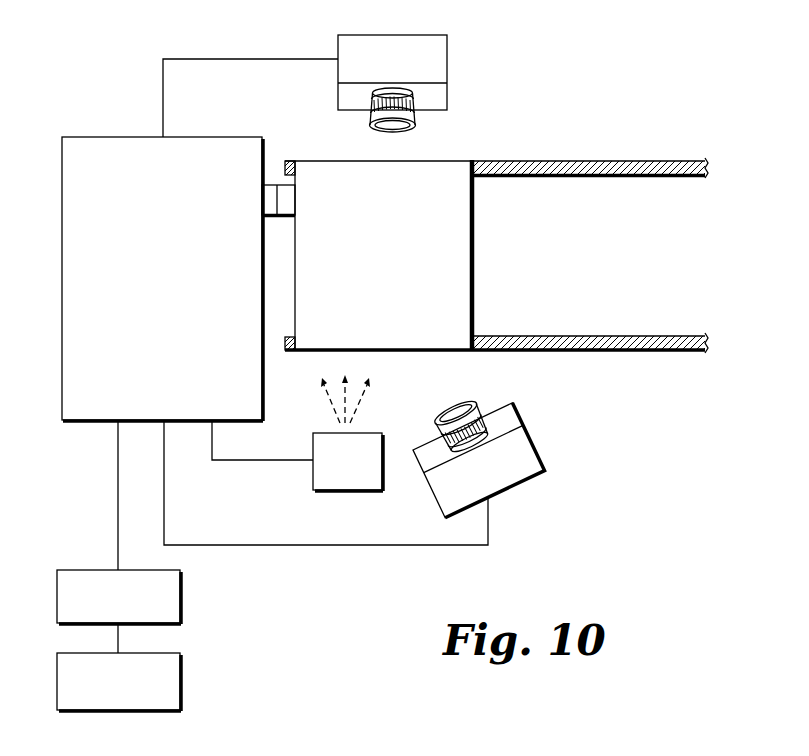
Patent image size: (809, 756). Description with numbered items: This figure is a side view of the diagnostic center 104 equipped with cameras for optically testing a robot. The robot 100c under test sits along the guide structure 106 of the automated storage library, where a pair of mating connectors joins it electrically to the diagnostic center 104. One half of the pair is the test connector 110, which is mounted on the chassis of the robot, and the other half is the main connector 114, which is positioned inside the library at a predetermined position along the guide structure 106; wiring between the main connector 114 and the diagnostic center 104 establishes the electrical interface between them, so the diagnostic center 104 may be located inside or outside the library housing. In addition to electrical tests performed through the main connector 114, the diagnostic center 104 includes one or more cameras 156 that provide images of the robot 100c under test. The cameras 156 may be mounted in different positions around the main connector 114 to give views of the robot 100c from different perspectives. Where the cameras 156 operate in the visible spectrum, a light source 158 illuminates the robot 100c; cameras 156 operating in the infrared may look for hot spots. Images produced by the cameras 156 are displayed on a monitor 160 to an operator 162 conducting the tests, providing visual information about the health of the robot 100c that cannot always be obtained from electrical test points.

The diagnostic center 104 is at (105, 136).
The main connector 114 is at (268, 199).
The test connector 110 is at (290, 199).
The robot under test 100c is at (468, 247).
The guide structure 106 is at (648, 178).
The cameras 156 is at (448, 68).
The light source 158 is at (350, 492).
The monitor 160 is at (165, 588).
The operator 162 is at (165, 672).